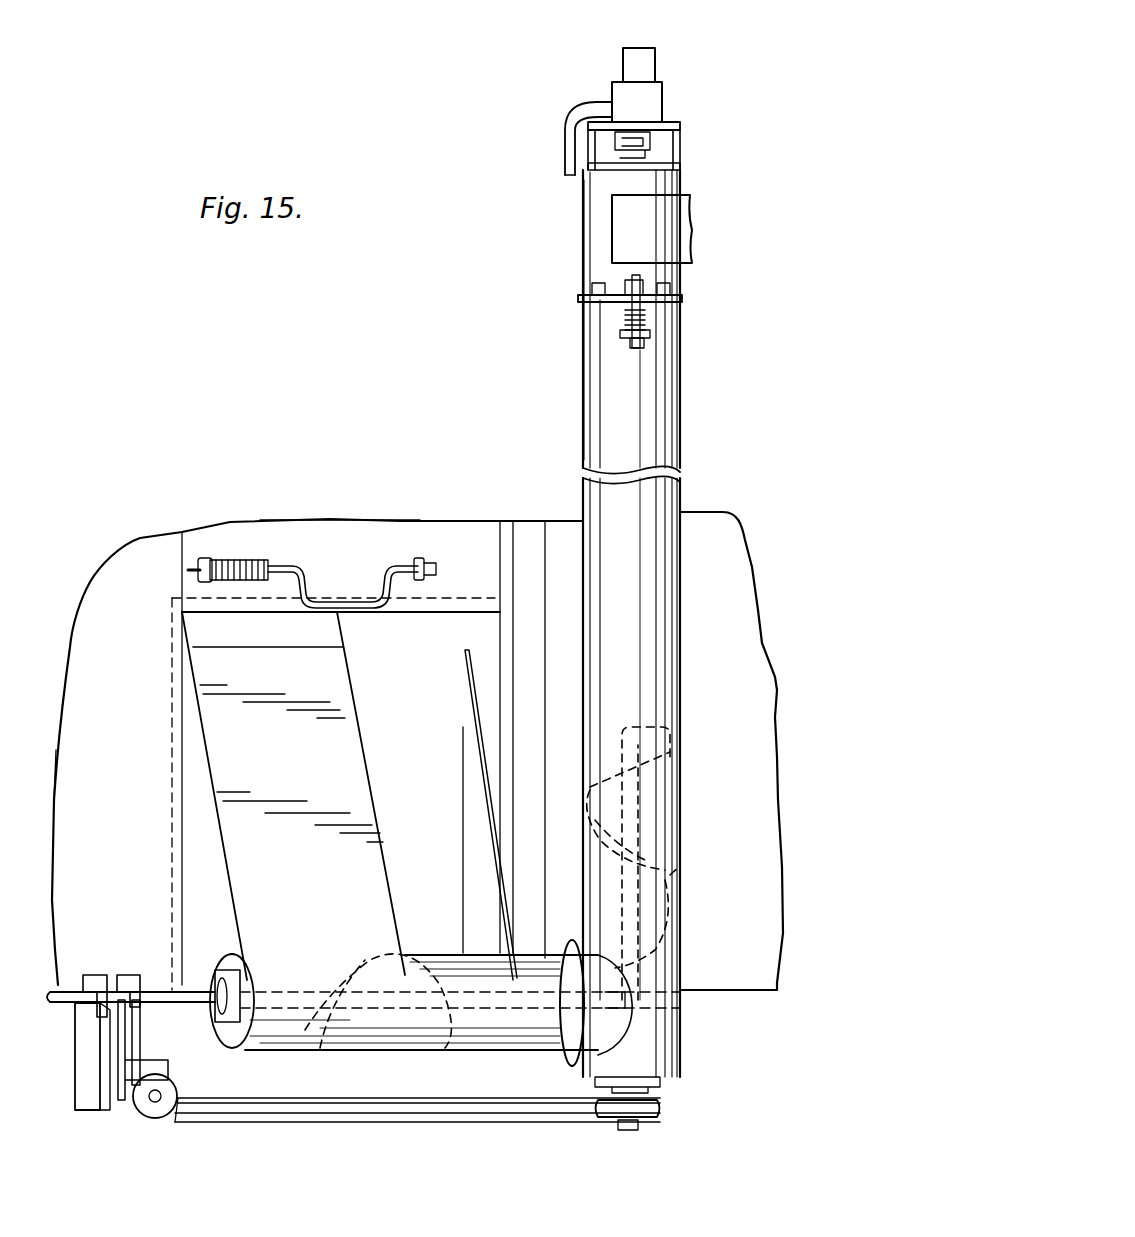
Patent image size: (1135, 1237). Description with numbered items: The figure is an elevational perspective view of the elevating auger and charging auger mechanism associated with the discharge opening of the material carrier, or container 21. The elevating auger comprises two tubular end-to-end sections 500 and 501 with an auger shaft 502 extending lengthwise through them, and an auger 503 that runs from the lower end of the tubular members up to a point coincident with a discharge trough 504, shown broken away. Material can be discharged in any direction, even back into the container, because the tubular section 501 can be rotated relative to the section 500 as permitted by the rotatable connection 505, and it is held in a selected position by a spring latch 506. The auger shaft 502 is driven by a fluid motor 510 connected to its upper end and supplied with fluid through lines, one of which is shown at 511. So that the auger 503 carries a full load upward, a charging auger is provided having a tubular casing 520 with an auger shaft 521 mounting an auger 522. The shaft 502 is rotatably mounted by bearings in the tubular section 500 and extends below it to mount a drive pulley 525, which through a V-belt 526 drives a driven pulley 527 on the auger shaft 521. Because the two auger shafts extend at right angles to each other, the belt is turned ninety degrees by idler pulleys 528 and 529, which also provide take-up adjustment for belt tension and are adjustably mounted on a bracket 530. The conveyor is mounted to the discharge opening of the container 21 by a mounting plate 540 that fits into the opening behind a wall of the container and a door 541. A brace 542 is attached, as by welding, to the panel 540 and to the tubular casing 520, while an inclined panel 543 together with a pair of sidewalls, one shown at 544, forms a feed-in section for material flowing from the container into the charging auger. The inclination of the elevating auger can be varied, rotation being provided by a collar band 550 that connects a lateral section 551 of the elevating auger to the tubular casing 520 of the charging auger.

The container 21 is at (782, 690).
The tubular section 500 is at (660, 395).
The tubular section 501 is at (588, 260).
The auger shaft 502 is at (685, 775).
The auger 503 is at (682, 866).
The discharge trough 504 is at (688, 200).
The rotatable connection 505 is at (684, 298).
The spring latch 506 is at (648, 345).
The fluid motor 510 is at (657, 95).
The line 511 is at (573, 167).
The tubular casing 520 is at (375, 1042).
The auger shaft 521 is at (215, 975).
The auger 522 is at (360, 962).
The drive pulley 525 is at (660, 1108).
The V-belt 526 is at (310, 1118).
The driven pulley 527 is at (128, 973).
The idler pulley 528 is at (155, 1110).
The idler pulley 529 is at (148, 1058).
The bracket 530 is at (100, 1100).
The mounting plate 540 is at (430, 630).
The door 541 is at (340, 530).
The brace 542 is at (468, 730).
The inclined panel 543 is at (345, 700).
The sidewall 544 is at (190, 827).
The collar band 550 is at (566, 1062).
The lateral section 551 is at (630, 1010).